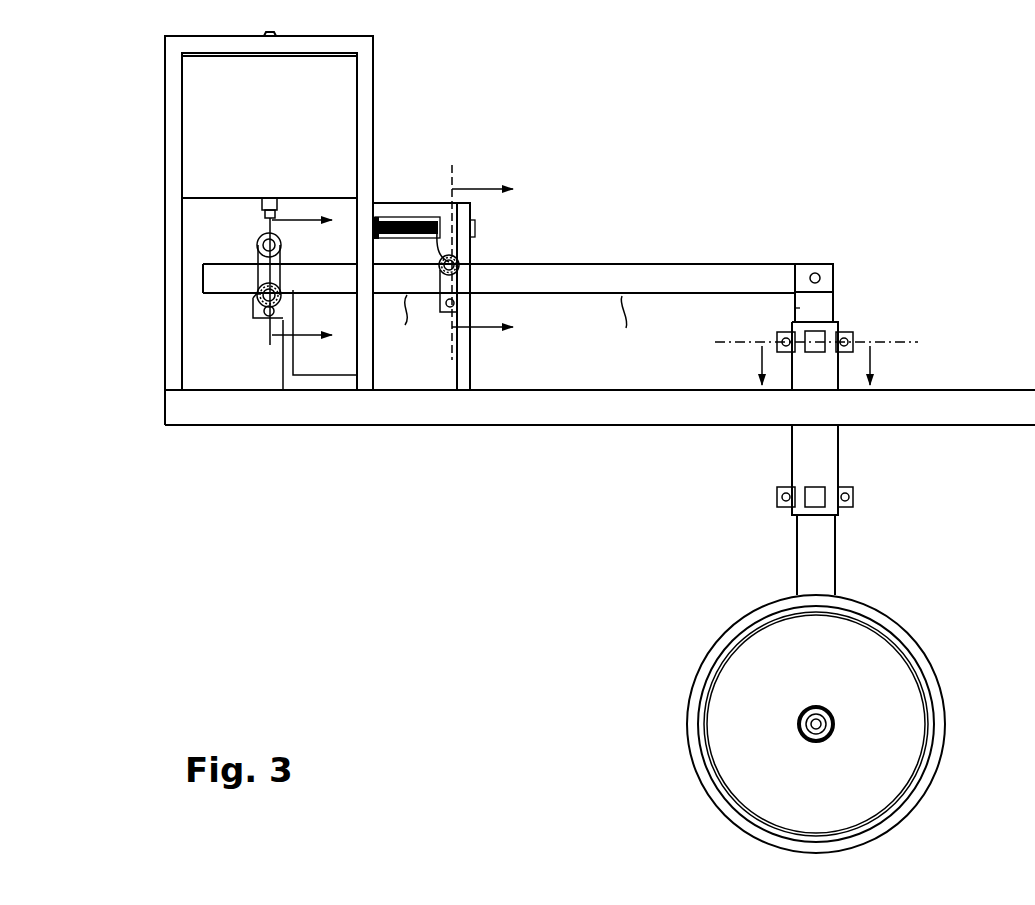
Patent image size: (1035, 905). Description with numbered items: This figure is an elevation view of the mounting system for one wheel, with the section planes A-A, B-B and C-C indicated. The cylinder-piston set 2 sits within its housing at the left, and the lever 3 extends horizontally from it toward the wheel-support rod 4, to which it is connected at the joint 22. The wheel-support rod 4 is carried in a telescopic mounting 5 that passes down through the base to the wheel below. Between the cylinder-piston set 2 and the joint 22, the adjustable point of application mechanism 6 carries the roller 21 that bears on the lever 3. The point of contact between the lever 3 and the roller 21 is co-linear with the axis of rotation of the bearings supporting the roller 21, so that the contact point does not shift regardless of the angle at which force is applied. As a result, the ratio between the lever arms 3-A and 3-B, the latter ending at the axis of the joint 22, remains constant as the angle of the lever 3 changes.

The cylinder-piston set 2 is at (358, 67).
The lever 3 is at (690, 272).
The wheel-support rod 4 is at (815, 308).
The telescopic mounting 5 is at (813, 465).
The adjustable point of application mechanism 6 is at (415, 195).
The roller 21 is at (456, 263).
The joint 22 is at (818, 263).